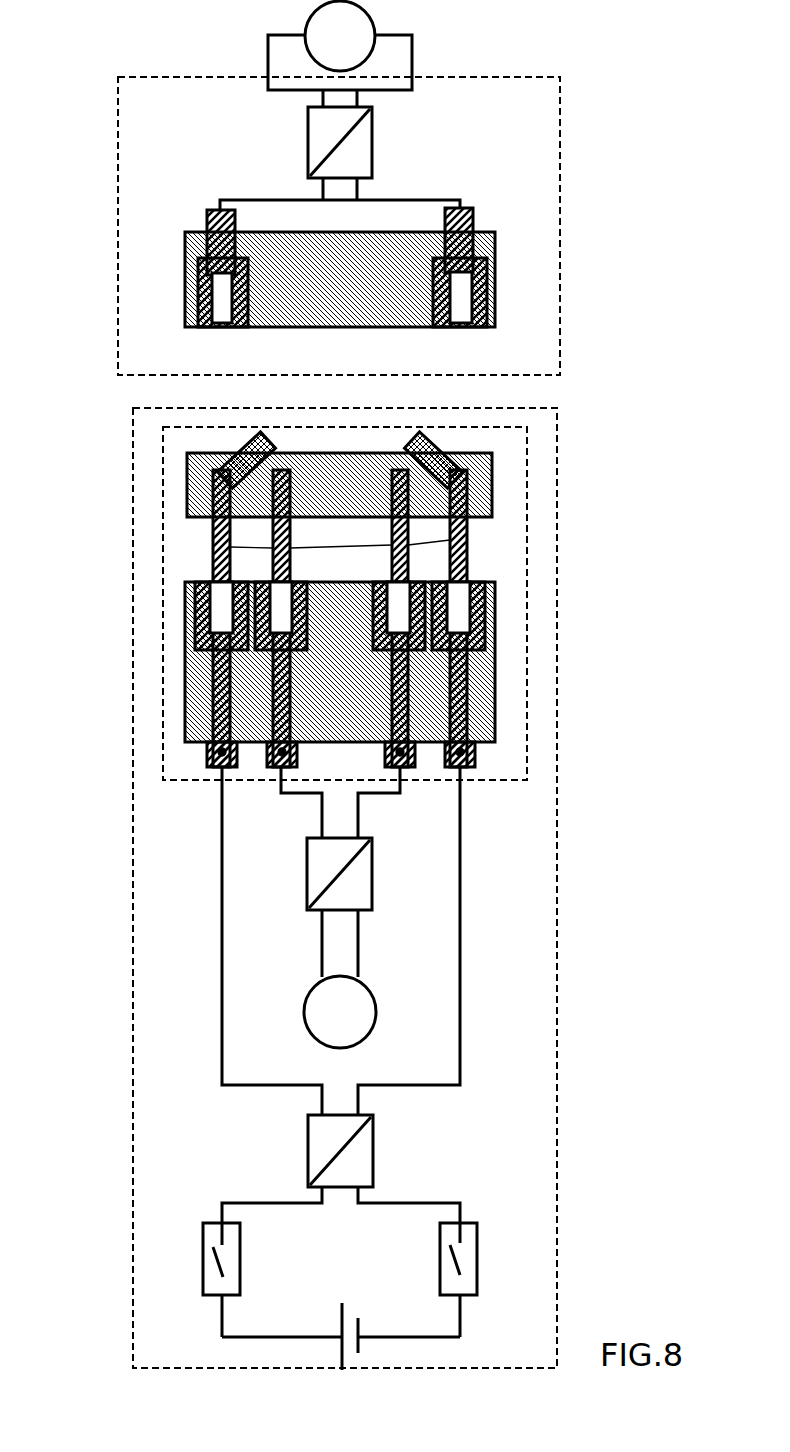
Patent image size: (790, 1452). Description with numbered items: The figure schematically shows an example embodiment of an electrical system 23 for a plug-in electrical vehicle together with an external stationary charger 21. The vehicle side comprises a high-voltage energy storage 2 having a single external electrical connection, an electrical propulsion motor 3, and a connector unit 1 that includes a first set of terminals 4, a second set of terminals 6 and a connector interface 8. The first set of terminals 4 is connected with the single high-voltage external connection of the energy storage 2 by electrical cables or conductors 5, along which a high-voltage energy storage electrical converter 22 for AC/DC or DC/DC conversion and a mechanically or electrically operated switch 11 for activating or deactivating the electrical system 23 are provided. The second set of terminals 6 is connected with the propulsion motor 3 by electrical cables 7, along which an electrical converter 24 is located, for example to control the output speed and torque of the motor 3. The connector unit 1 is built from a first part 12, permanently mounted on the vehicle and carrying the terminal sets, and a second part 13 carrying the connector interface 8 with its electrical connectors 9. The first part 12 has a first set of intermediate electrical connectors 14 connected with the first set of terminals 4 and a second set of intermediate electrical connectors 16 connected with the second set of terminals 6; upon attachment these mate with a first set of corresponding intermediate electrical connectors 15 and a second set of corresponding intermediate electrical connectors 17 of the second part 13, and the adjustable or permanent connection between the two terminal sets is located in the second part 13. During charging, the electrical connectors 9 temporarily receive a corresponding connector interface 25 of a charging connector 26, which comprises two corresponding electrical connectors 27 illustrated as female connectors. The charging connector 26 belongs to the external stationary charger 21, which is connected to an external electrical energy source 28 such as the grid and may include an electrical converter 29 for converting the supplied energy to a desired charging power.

The connector unit 1 is at (530, 582).
The high-voltage energy storage 2 is at (340, 1348).
The electrical propulsion motor 3 is at (377, 1018).
The first set of terminals 4 is at (470, 770).
The electrical cables or conductors 5 is at (222, 890).
The second set of terminals 6 is at (270, 768).
The electrical cables 7 is at (358, 812).
The connector interface 8 is at (322, 401).
The electrical connectors 9 is at (440, 440).
The switch 11 is at (203, 1257).
The first part 12 is at (188, 723).
The second part 13 is at (190, 465).
The first set of intermediate electrical connectors 14 is at (300, 582).
The first set of corresponding intermediate electrical connectors 15 is at (213, 537).
The second set of intermediate electrical connectors 16 is at (212, 582).
The second set of corresponding intermediate electrical connectors 17 is at (450, 532).
The external stationary charger 21 is at (560, 105).
The high-voltage energy storage electrical converter 22 is at (373, 1137).
The electrical system 23 is at (558, 651).
The electrical converter 24 is at (372, 875).
The corresponding connector interface 25 is at (366, 363).
The charging connector 26 is at (185, 252).
The corresponding electrical connectors 27 is at (247, 328).
The external electrical energy source 28 is at (306, 19).
The electrical converter 29 is at (308, 150).